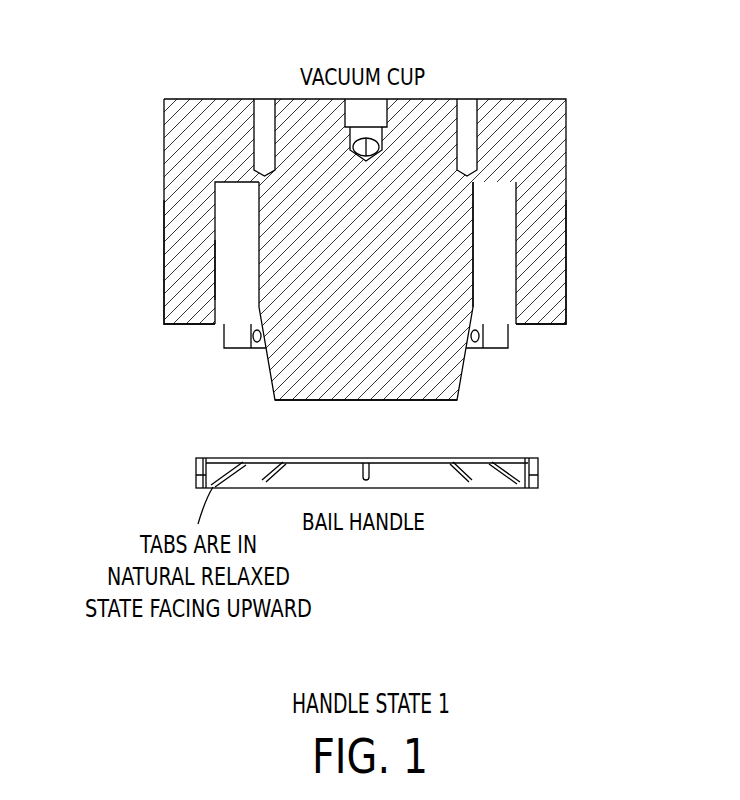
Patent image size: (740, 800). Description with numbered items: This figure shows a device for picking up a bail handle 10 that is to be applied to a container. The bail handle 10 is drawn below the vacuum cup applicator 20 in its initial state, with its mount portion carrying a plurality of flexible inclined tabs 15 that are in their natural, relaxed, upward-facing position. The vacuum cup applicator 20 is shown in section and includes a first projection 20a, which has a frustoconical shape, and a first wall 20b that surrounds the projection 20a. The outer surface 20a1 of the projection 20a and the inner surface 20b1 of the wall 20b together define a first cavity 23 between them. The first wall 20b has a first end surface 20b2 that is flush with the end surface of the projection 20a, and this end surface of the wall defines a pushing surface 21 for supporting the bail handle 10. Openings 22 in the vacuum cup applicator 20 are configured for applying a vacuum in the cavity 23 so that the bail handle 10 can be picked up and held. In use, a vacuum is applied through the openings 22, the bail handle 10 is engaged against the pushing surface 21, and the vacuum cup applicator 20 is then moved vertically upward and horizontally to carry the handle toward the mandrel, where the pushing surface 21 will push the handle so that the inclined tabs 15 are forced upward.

The bail handle 10 is at (538, 478).
The inclined tabs 15 is at (435, 467).
The vacuum cup applicator 20 is at (440, 246).
The first projection 20a is at (348, 253).
The outer surface of projection 20a1 is at (255, 222).
The first wall 20b is at (180, 247).
The inner surface of wall 20b1 is at (517, 273).
The first end surface of wall 20b2 is at (350, 401).
The pushing surface 21 is at (537, 317).
The openings 22 is at (235, 338).
The first cavity 23 is at (226, 267).